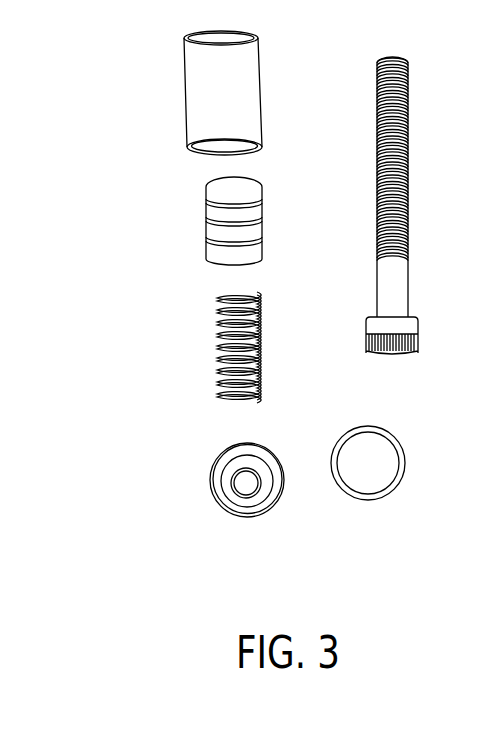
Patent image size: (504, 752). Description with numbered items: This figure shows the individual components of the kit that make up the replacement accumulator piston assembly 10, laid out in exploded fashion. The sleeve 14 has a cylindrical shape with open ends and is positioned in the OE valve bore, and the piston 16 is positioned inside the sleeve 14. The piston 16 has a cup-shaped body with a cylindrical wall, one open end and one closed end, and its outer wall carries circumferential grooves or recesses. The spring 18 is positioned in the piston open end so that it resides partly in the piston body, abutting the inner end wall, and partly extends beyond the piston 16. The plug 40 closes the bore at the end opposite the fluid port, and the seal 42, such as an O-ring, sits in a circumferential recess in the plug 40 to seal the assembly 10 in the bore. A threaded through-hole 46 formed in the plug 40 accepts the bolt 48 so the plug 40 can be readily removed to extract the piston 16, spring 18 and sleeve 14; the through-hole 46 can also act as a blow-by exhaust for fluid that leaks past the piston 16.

The replacement accumulator piston assembly 10 is at (100, 104).
The sleeve 14 is at (188, 73).
The piston 16 is at (205, 222).
The spring 18 is at (218, 346).
The plug 40 is at (216, 490).
The seal 42 is at (402, 477).
The through-hole 46 is at (244, 488).
The bolt 48 is at (408, 287).